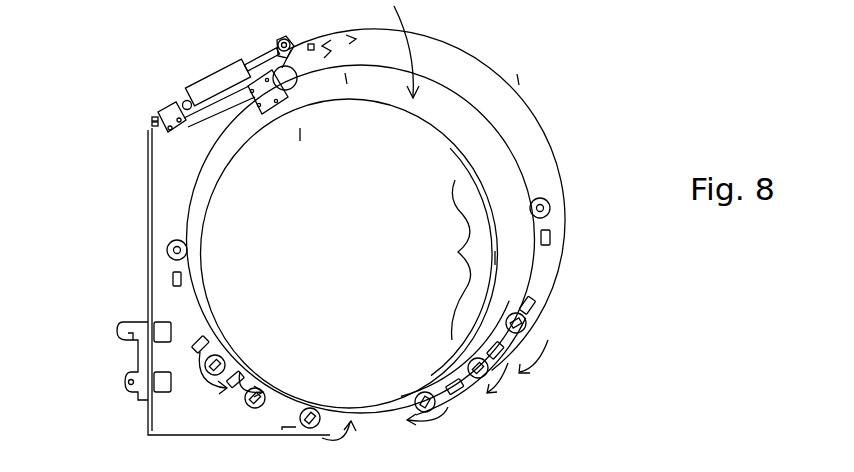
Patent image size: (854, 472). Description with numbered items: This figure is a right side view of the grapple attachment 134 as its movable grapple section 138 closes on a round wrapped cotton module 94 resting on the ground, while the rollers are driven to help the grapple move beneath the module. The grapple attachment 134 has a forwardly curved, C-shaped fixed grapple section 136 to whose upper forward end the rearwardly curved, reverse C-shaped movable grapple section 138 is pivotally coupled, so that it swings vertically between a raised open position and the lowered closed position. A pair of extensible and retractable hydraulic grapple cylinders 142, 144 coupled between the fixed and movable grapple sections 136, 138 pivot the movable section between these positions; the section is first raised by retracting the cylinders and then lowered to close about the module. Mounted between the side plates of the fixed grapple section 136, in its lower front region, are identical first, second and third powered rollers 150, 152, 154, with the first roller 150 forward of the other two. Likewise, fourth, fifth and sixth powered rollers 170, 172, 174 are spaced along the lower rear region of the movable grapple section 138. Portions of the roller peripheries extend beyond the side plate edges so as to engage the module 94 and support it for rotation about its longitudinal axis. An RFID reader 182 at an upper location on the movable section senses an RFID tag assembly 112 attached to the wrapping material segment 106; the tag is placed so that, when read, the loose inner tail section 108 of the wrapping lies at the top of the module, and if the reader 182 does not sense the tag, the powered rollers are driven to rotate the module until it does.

The wrapped cotton module 94 is at (331, 252).
The wrapping material segment 106 is at (468, 148).
The inner tail section 108 is at (442, 260).
The RFID tag assembly 112 is at (496, 258).
The grapple attachment 134 is at (116, 108).
The fixed grapple section 136 is at (160, 183).
The movable grapple section 138 is at (522, 110).
The hydraulic grapple cylinder 142 is at (193, 110).
The hydraulic grapple cylinder 144 is at (269, 53).
The first powered roller 150 is at (318, 406).
The second powered roller 152 is at (258, 388).
The third powered roller 154 is at (240, 350).
The fourth powered roller 170 is at (422, 388).
The fifth powered roller 172 is at (468, 382).
The sixth powered roller 174 is at (513, 360).
The RFID reader 182 is at (536, 460).